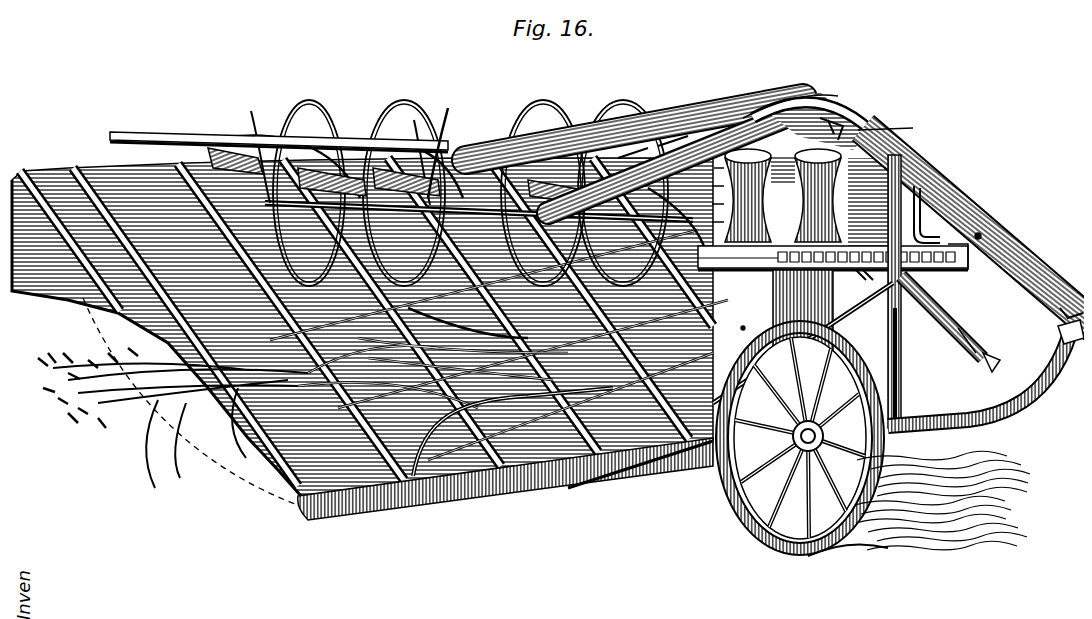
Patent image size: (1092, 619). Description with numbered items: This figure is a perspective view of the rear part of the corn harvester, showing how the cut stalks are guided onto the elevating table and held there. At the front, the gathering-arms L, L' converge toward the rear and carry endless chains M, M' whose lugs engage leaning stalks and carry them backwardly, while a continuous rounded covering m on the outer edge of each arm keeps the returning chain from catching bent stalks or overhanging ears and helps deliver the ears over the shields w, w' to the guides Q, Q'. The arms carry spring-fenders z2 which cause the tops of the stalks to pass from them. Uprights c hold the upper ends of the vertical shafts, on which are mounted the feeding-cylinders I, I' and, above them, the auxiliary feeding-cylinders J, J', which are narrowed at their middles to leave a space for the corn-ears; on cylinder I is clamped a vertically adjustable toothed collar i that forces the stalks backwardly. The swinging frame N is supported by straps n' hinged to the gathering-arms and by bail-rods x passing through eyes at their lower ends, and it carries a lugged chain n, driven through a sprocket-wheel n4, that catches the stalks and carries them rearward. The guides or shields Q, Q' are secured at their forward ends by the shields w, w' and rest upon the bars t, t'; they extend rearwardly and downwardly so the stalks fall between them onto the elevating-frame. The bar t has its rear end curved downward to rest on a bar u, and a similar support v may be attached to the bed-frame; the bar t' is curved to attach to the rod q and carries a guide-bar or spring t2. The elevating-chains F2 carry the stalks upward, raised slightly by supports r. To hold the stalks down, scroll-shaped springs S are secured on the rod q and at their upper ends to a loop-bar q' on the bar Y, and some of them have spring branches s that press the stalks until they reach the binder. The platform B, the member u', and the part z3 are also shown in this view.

The platform B is at (362, 327).
The guides or supports for the elevating-chains r is at (290, 500).
The bar or support t is at (499, 345).
The rod or arm q is at (486, 223).
The grain sheaf guide u' is at (303, 402).
The bar u is at (513, 432).
The elevating-chains F2 is at (400, 505).
The springs S is at (464, 186).
The spring branches s is at (341, 152).
The rod or loop-bar q' is at (518, 154).
The bar Y is at (279, 132).
The guide or shield Q' is at (634, 116).
The guide or shield Q is at (678, 160).
The guide-bar or spring t2 is at (633, 149).
The adjusting link z3 is at (673, 139).
The bar t' is at (749, 225).
The auxiliary feeding-cylinder J' is at (744, 195).
The auxiliary feeding-cylinder J is at (810, 195).
The support v is at (718, 177).
The bracket c' is at (716, 194).
The pivot p is at (718, 211).
The lever x' is at (714, 230).
The shield w is at (816, 117).
The shield w' is at (790, 93).
The spring-fenders z2 is at (817, 127).
The gathering-arm L is at (973, 229).
The endless chain M is at (903, 127).
The covering for the chain m is at (1072, 293).
The bail-rods x is at (860, 270).
The chains n is at (833, 265).
The swinging bar or frame N is at (959, 263).
The links or straps n' is at (943, 211).
The sprocket-wheel n4 is at (859, 281).
The uprights c is at (887, 291).
The feeding-cylinder I' is at (800, 360).
The feeding-cylinder I is at (803, 343).
The gathering-arm L' is at (950, 324).
The endless chain M' is at (980, 338).
The collar i is at (986, 373).